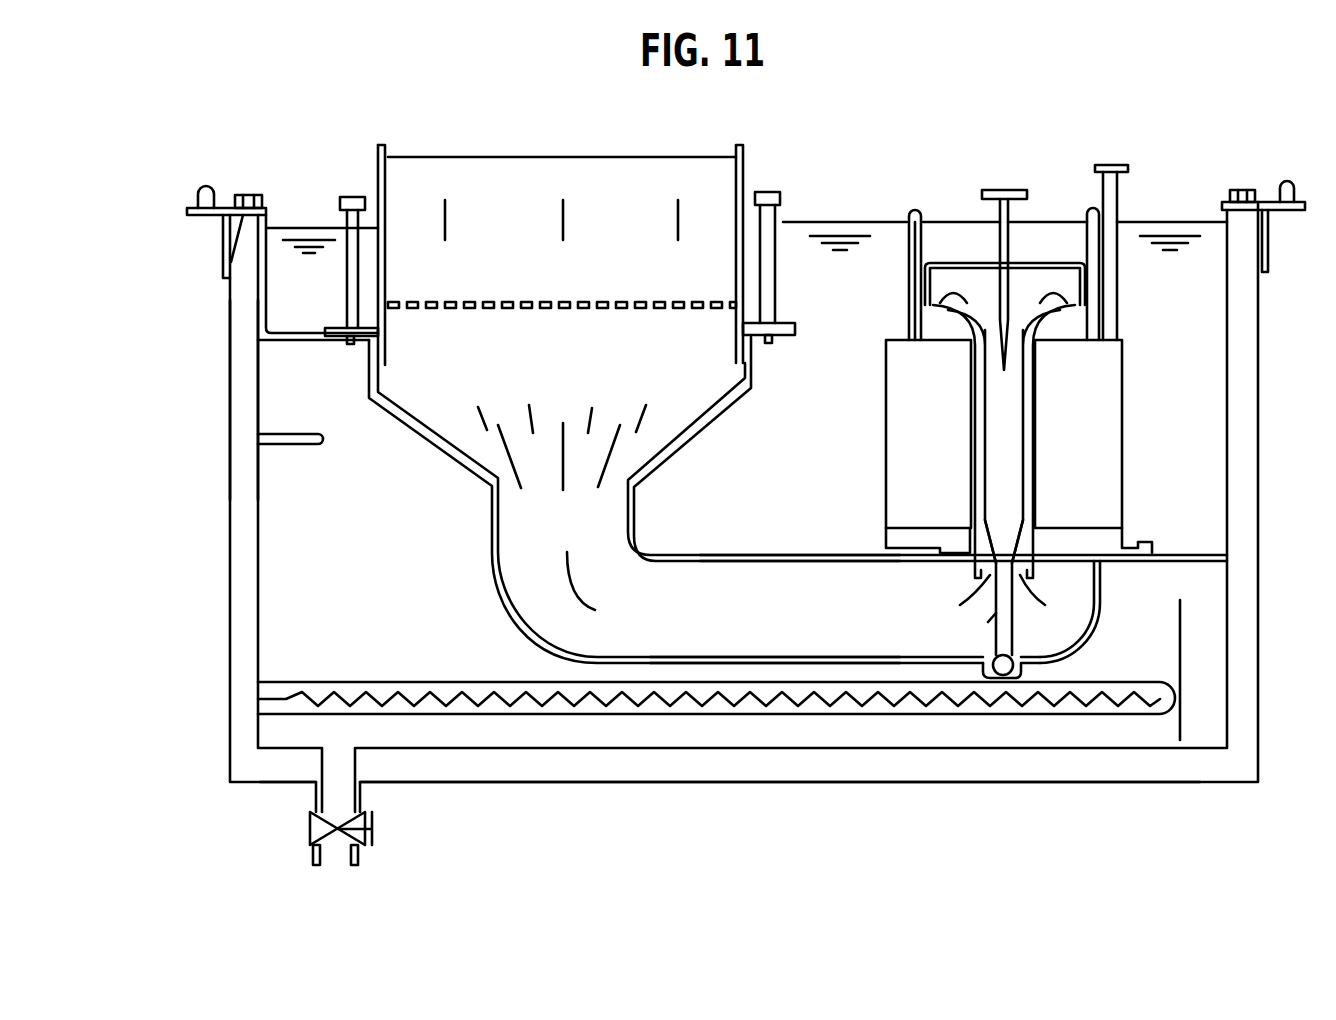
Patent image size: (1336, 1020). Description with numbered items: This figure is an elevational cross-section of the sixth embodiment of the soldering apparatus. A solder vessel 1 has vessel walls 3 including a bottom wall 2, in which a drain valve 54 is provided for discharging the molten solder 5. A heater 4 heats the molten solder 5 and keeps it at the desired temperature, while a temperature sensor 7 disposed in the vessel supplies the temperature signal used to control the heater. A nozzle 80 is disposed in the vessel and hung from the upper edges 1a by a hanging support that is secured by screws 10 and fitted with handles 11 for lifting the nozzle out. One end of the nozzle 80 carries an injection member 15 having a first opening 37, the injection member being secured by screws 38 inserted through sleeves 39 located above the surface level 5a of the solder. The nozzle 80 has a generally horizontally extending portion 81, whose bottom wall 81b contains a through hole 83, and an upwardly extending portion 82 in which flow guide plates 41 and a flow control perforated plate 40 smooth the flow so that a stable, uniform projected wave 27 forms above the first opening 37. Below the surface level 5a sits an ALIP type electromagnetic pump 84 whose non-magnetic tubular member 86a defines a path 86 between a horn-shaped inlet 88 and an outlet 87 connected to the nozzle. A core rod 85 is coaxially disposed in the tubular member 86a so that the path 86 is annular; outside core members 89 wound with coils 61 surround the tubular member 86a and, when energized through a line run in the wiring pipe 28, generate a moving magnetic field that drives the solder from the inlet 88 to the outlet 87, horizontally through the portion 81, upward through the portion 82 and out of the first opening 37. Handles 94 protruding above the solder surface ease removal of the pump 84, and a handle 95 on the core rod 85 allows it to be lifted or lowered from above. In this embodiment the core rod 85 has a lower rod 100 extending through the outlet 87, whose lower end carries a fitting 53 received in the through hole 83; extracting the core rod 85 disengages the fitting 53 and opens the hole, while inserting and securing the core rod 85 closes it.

The solder vessel 1 is at (1250, 708).
The upper edges 1a is at (223, 258).
The bottom wall 2 is at (650, 765).
The vessel walls 3 is at (235, 323).
The heater 4 is at (347, 692).
The molten solder 5 is at (1212, 678).
The surface level 5a is at (836, 222).
The temperature sensor 7 is at (292, 432).
The screws 10 is at (242, 194).
The handles 11 is at (203, 186).
The injection member 15 is at (748, 185).
The projected wave 27 is at (562, 155).
The wiring pipe 28 is at (1118, 200).
The first opening 37 is at (493, 175).
The screws 38 is at (347, 299).
The sleeves 39 is at (350, 196).
The flow control perforated plate 40 is at (480, 305).
The flow guide plates 41 is at (502, 445).
The fitting 53 is at (1008, 650).
The drain valve 54 is at (378, 830).
The coils 61 is at (1077, 497).
The nozzle 80 is at (413, 445).
The horizontally extending portion 81 is at (757, 555).
The bottom wall 81b is at (773, 656).
The upwardly extending portion 82 is at (694, 425).
The through hole 83 is at (988, 652).
The electromagnetic pump 84 is at (886, 412).
The core rod 85 is at (1013, 405).
The path 86 is at (1022, 445).
The tubular member 86a is at (972, 405).
The outlet 87 is at (1023, 585).
The inlet 88 is at (980, 298).
The core members 89 is at (1102, 468).
The handles 94 is at (915, 210).
The handle 95 is at (1003, 190).
The lower rod 100 is at (976, 520).